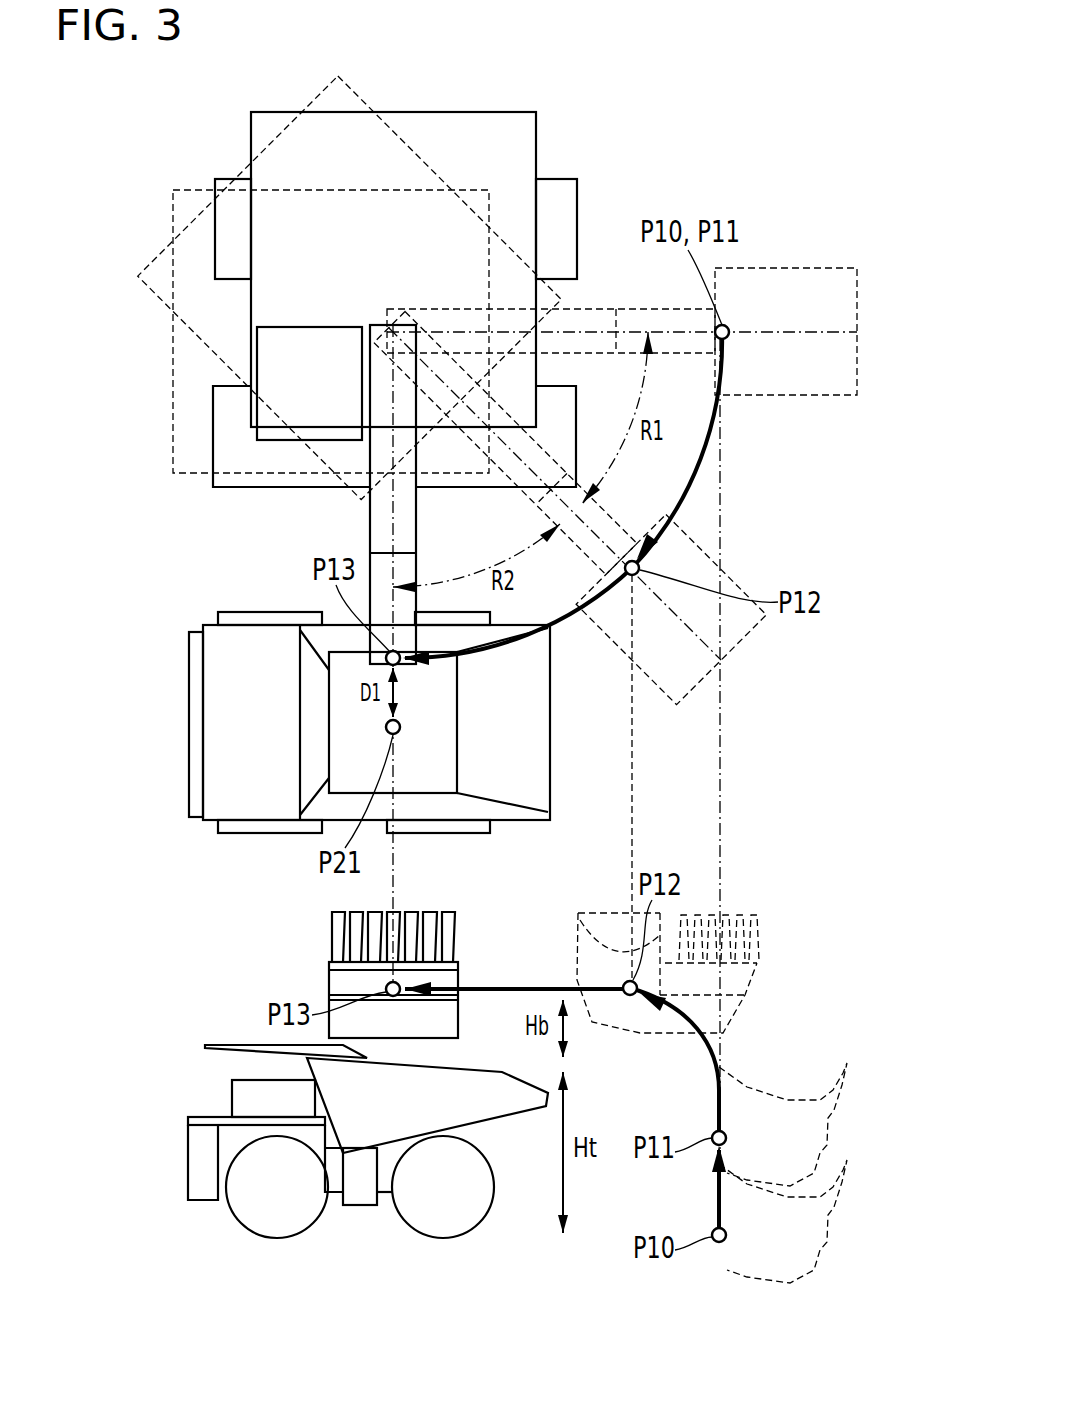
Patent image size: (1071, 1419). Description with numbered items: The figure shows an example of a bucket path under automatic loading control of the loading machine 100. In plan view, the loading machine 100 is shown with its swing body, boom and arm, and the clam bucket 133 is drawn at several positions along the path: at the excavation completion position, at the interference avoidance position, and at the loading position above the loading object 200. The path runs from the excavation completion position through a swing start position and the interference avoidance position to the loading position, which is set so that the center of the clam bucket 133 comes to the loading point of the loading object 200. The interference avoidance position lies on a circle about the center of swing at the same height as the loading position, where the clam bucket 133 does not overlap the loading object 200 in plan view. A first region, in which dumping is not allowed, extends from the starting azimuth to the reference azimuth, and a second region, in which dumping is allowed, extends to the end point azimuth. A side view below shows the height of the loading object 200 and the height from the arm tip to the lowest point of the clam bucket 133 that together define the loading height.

The loading machine 100 is at (158, 118).
The clam bucket 133 is at (800, 268).
The loading object 200 is at (189, 655).